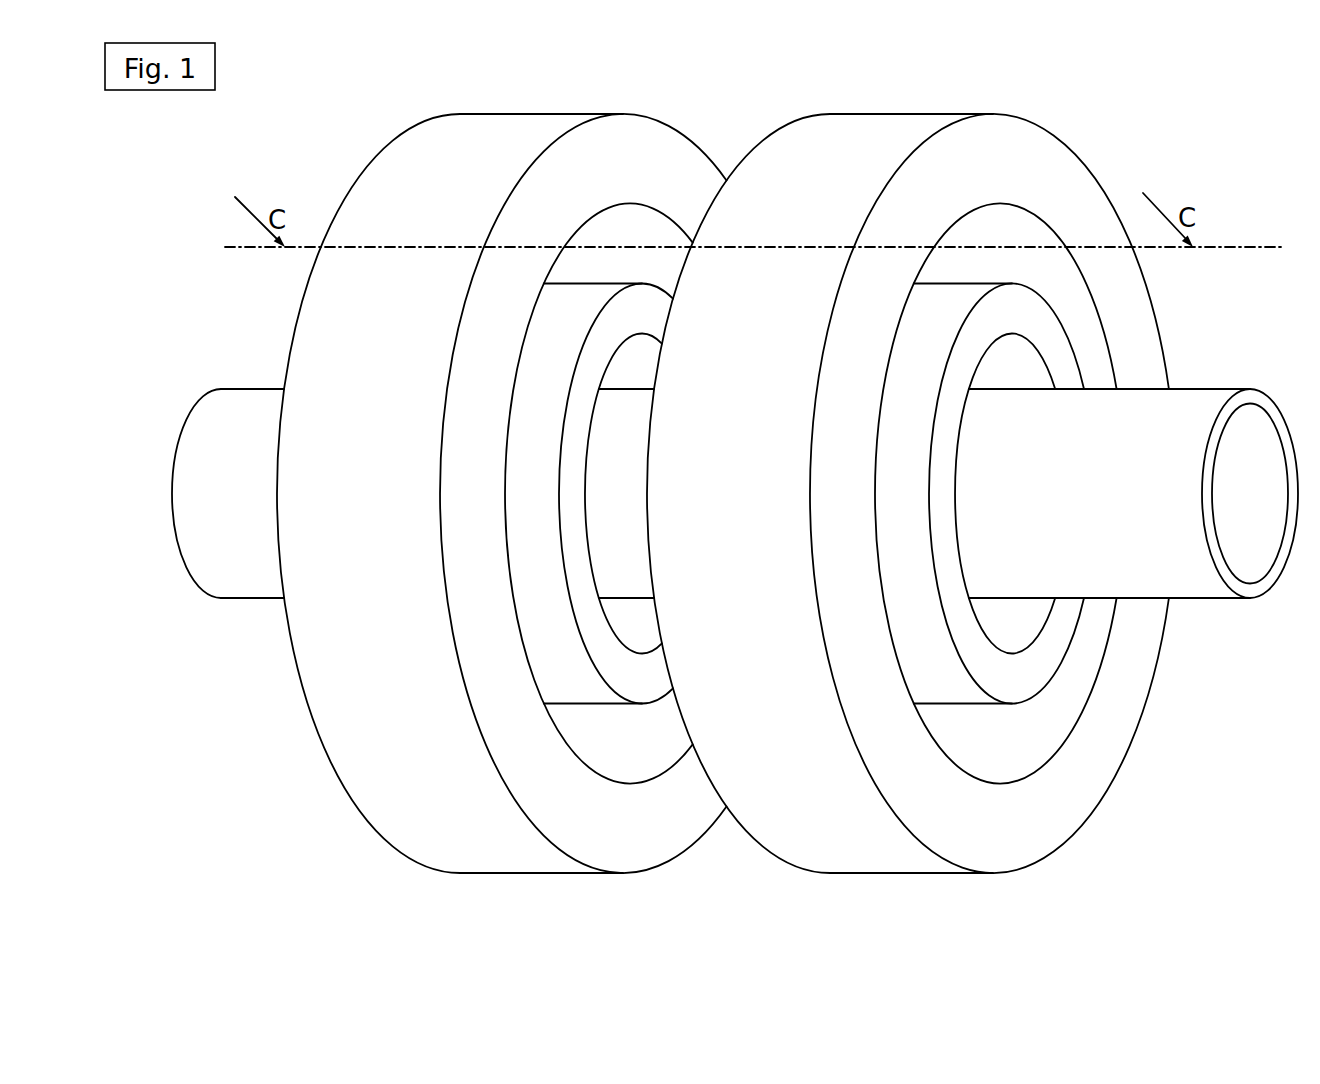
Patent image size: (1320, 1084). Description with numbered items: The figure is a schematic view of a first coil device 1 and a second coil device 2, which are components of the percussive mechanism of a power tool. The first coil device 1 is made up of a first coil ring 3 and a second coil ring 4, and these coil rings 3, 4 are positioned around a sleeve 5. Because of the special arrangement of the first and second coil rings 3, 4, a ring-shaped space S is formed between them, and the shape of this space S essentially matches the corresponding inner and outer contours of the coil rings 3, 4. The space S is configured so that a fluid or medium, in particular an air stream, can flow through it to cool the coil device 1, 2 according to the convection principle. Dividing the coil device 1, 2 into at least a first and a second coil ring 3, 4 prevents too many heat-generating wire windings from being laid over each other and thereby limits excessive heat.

The first coil device 1 is at (234, 712).
The second coil device 2 is at (1222, 341).
The first coil ring 3 is at (492, 853).
The second coil ring 4 is at (577, 672).
The sleeve 5 is at (1193, 575).
The ring-shaped space S is at (1048, 722).